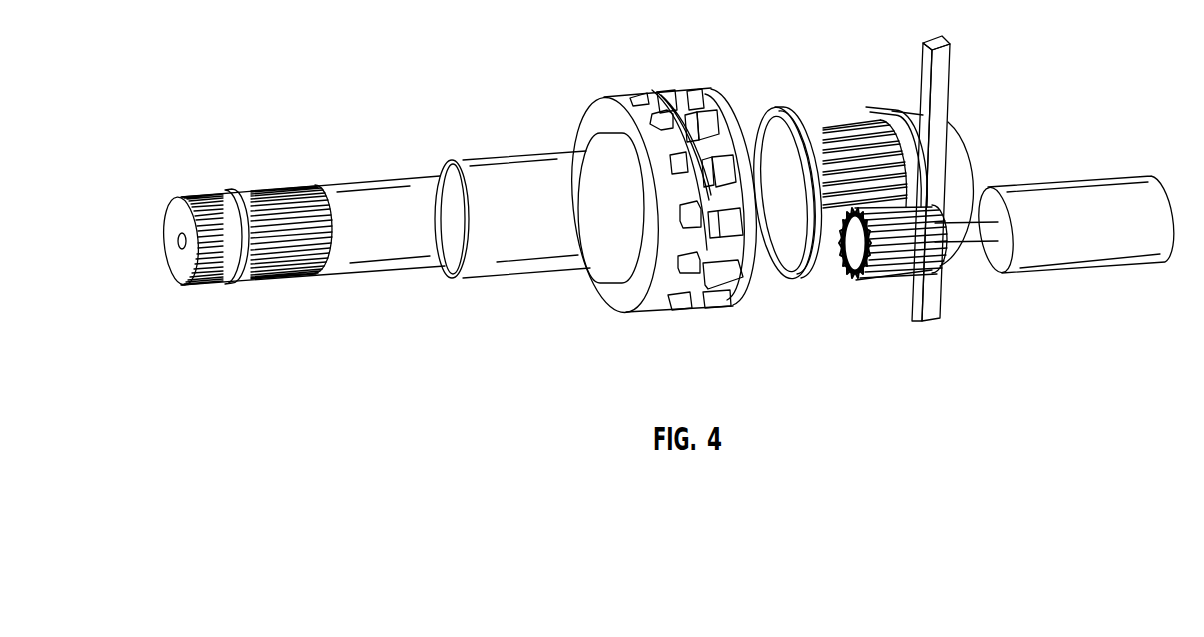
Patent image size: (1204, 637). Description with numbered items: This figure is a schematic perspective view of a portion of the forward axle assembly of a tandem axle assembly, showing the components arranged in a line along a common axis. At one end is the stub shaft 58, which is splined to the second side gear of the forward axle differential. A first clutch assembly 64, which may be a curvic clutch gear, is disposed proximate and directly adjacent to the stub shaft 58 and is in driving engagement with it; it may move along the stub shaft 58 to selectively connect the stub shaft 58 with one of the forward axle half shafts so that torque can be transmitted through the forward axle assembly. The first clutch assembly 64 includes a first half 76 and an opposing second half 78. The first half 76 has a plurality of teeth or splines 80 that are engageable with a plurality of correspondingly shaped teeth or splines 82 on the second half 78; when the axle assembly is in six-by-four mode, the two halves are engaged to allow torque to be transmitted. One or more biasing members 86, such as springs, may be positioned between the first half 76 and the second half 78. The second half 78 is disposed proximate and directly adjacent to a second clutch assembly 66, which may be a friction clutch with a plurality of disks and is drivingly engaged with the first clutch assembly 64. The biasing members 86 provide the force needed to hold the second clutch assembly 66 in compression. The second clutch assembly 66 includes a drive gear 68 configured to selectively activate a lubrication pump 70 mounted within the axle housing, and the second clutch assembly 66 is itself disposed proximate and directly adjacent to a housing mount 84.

The stub shaft 58 is at (371, 279).
The first clutch assembly 64 is at (688, 322).
The second clutch assembly 66 is at (830, 270).
The drive gear 68 is at (838, 132).
The lubrication pump 70 is at (1066, 265).
The first half 76 is at (622, 297).
The second half 78 is at (740, 306).
The teeth or splines 80 is at (657, 102).
The teeth or splines 82 is at (685, 110).
The housing mount 84 is at (956, 133).
The biasing members 86 is at (705, 177).